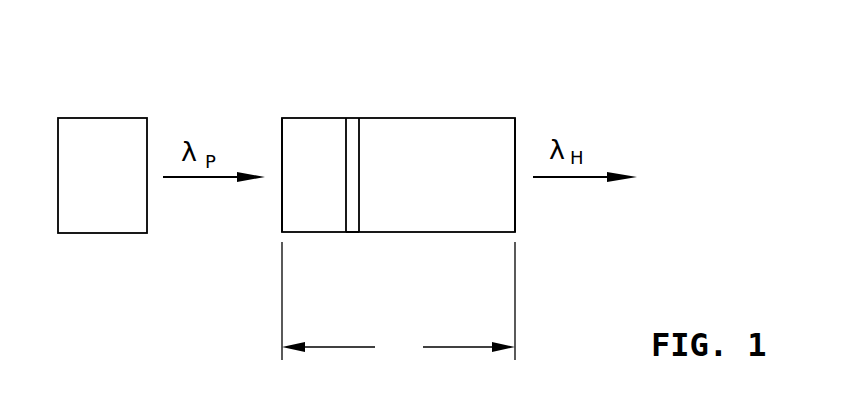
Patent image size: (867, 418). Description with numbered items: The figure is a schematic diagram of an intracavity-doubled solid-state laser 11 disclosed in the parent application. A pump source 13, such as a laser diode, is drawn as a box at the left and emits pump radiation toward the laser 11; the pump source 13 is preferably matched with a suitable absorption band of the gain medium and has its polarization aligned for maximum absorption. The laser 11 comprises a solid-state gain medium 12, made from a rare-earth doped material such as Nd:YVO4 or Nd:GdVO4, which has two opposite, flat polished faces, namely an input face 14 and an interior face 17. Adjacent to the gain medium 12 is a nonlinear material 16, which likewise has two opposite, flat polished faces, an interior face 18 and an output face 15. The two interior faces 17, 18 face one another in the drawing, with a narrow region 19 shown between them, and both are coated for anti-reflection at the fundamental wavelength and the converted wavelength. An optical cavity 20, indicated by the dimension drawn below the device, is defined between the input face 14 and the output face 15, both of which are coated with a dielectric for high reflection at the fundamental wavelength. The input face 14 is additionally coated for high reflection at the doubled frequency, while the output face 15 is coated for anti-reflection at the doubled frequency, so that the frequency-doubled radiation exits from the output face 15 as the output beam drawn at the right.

The laser 11 is at (349, 91).
The solid-state gain medium 12 is at (298, 128).
The pump source 13 is at (102, 118).
The input face 14 is at (282, 222).
The output face 15 is at (515, 218).
The nonlinear material 16 is at (474, 130).
The interior face 17 is at (345, 197).
The interior face 18 is at (359, 157).
The gap between sections 19 is at (353, 225).
The optical cavity 20 is at (398, 302).